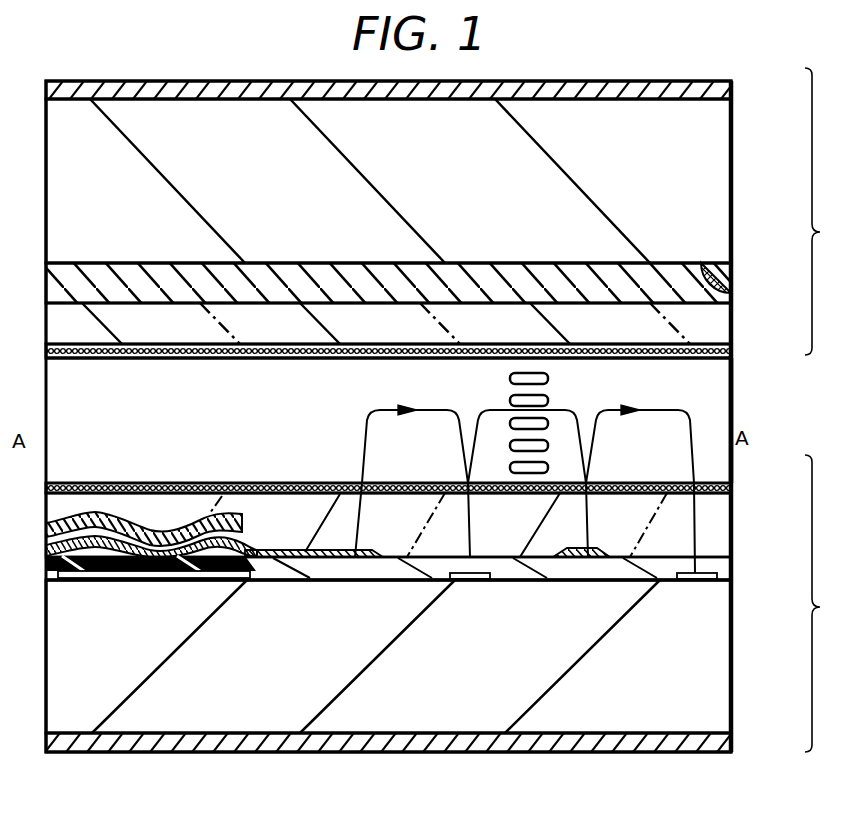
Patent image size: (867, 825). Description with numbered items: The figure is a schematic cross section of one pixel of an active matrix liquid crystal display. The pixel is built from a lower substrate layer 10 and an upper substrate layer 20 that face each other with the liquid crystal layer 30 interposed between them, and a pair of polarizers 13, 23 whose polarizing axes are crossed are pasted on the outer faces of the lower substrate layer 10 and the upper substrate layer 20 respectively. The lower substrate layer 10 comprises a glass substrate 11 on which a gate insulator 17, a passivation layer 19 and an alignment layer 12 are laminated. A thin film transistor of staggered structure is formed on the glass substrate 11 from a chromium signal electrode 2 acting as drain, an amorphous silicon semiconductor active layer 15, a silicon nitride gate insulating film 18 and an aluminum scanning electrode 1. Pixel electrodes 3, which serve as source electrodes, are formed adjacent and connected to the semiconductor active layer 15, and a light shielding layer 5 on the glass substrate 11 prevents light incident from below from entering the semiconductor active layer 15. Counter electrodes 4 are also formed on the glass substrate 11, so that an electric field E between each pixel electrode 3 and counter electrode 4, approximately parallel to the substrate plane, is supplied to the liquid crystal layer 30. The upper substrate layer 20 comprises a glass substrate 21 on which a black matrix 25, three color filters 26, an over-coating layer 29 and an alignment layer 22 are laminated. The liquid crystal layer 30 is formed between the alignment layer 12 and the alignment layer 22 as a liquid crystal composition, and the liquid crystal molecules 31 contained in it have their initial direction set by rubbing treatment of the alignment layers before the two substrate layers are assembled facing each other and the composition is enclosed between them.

The scanning electrode 1 is at (168, 522).
The signal electrode 2 is at (104, 577).
The pixel electrode 3 is at (274, 581).
The counter electrode 4 is at (478, 580).
The light shielding layer 5 is at (178, 579).
The lower substrate layer 10 is at (827, 603).
The glass substrate 11 is at (733, 626).
The alignment layer 12 is at (733, 486).
The polarizer 13 is at (733, 742).
The semiconductor active layer 15 is at (258, 537).
The gate insulator 17 is at (733, 568).
The gate insulating film 18 is at (253, 532).
The passivation layer 19 is at (733, 530).
The upper substrate layer 20 is at (829, 211).
The glass substrate 21 is at (735, 174).
The alignment layer 22 is at (733, 360).
The polarizer 23 is at (735, 94).
The black matrix 25 is at (733, 270).
The color filters 26 is at (733, 303).
The over-coating layer 29 is at (733, 342).
The liquid crystal layer 30 is at (733, 394).
The liquid crystal molecules 31 is at (545, 398).
The electric field E is at (565, 418).